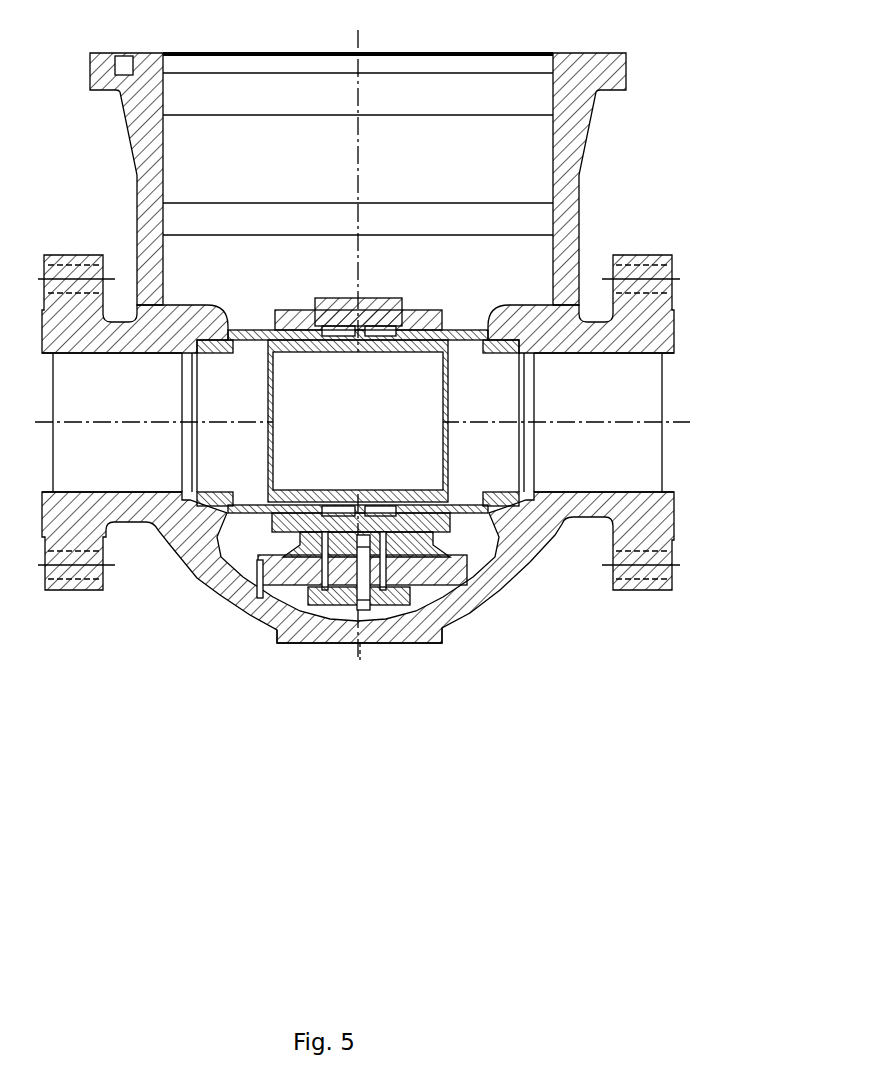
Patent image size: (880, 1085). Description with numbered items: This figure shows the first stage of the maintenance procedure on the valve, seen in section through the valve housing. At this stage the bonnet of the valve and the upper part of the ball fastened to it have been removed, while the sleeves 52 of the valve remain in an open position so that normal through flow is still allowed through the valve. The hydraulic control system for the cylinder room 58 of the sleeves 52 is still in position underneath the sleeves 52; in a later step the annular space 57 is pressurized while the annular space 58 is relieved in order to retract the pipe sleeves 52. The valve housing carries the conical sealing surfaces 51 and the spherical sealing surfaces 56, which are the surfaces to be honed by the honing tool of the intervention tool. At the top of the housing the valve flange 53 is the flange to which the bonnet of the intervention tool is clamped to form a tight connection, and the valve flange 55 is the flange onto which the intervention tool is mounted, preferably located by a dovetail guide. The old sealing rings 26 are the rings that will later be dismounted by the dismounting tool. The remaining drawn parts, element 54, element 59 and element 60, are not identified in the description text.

The sealing rings 26 is at (570, 489).
The conical sealing surfaces 51 is at (208, 345).
The sleeves 52 is at (238, 337).
The valve flange 53 is at (597, 73).
The flow bore 54 is at (607, 403).
The valve flange 55 is at (388, 300).
The spherical sealing surfaces 56 is at (495, 518).
The annular space 57 is at (403, 516).
The cylinder room 58 is at (413, 628).
The bolt 59 is at (387, 610).
The bottom boss 60 is at (330, 627).